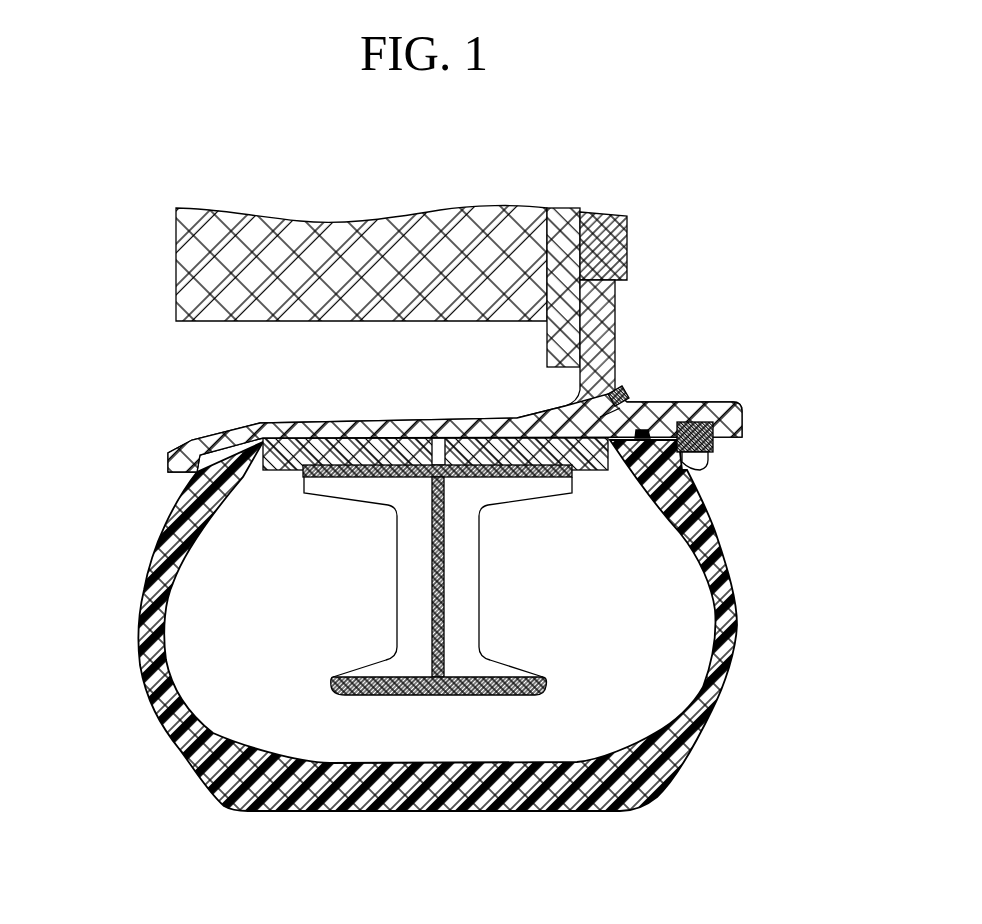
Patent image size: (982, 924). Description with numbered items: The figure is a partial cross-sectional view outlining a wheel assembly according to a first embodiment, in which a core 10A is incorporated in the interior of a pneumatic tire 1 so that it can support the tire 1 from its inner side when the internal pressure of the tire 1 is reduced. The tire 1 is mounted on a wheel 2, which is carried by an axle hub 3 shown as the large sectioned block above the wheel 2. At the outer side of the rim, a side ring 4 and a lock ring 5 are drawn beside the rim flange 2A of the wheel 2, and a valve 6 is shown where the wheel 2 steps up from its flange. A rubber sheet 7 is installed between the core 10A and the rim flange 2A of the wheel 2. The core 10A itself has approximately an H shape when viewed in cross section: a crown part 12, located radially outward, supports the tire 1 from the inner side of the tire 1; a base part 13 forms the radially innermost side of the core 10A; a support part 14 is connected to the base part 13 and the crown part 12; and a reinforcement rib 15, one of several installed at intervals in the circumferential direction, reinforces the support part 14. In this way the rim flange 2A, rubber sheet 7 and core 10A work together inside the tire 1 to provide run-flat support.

The tire 1 is at (687, 728).
The wheel 2 is at (593, 343).
The rim flange 2A is at (242, 435).
The axle hub 3 is at (196, 259).
The side ring 4 is at (703, 463).
The lock ring 5 is at (717, 445).
The valve 6 is at (607, 417).
The rubber sheet 7 is at (282, 463).
The core 10A is at (524, 710).
The crown part 12 is at (405, 694).
The base part 13 is at (508, 475).
The support part 14 is at (437, 608).
The reinforcement rib 15 is at (465, 633).